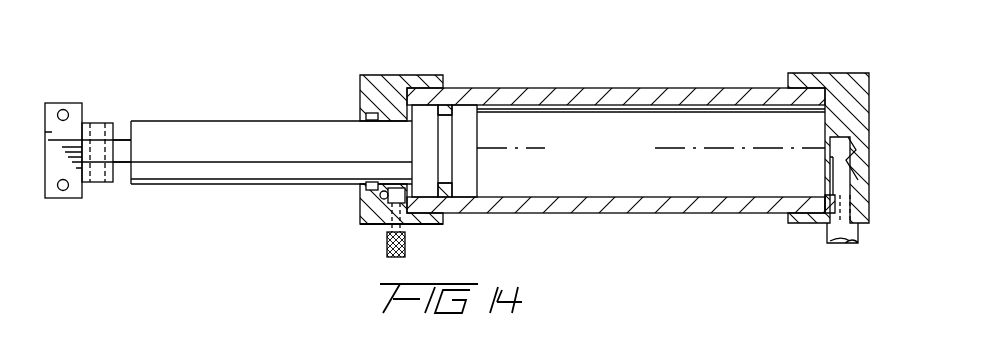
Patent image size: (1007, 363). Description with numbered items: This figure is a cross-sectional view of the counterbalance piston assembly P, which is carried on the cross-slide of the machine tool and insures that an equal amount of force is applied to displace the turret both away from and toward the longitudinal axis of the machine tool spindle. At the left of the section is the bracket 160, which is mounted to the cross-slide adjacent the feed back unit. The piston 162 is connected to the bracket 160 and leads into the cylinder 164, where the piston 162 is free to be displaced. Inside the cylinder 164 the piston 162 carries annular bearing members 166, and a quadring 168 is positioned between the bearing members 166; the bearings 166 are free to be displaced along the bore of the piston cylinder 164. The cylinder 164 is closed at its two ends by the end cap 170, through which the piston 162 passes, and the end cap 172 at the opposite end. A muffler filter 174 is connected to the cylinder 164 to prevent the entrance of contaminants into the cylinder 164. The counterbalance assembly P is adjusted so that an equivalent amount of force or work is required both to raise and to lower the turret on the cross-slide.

The bracket 160 is at (76, 103).
The piston 162 is at (292, 160).
The cylinder 164 is at (634, 205).
The annular bearing members 166 is at (420, 152).
The quadring 168 is at (450, 197).
The end cap 170 is at (420, 75).
The end cap 172 is at (862, 88).
The muffler filter 174 is at (407, 244).
The counterbalance piston assembly P is at (527, 56).